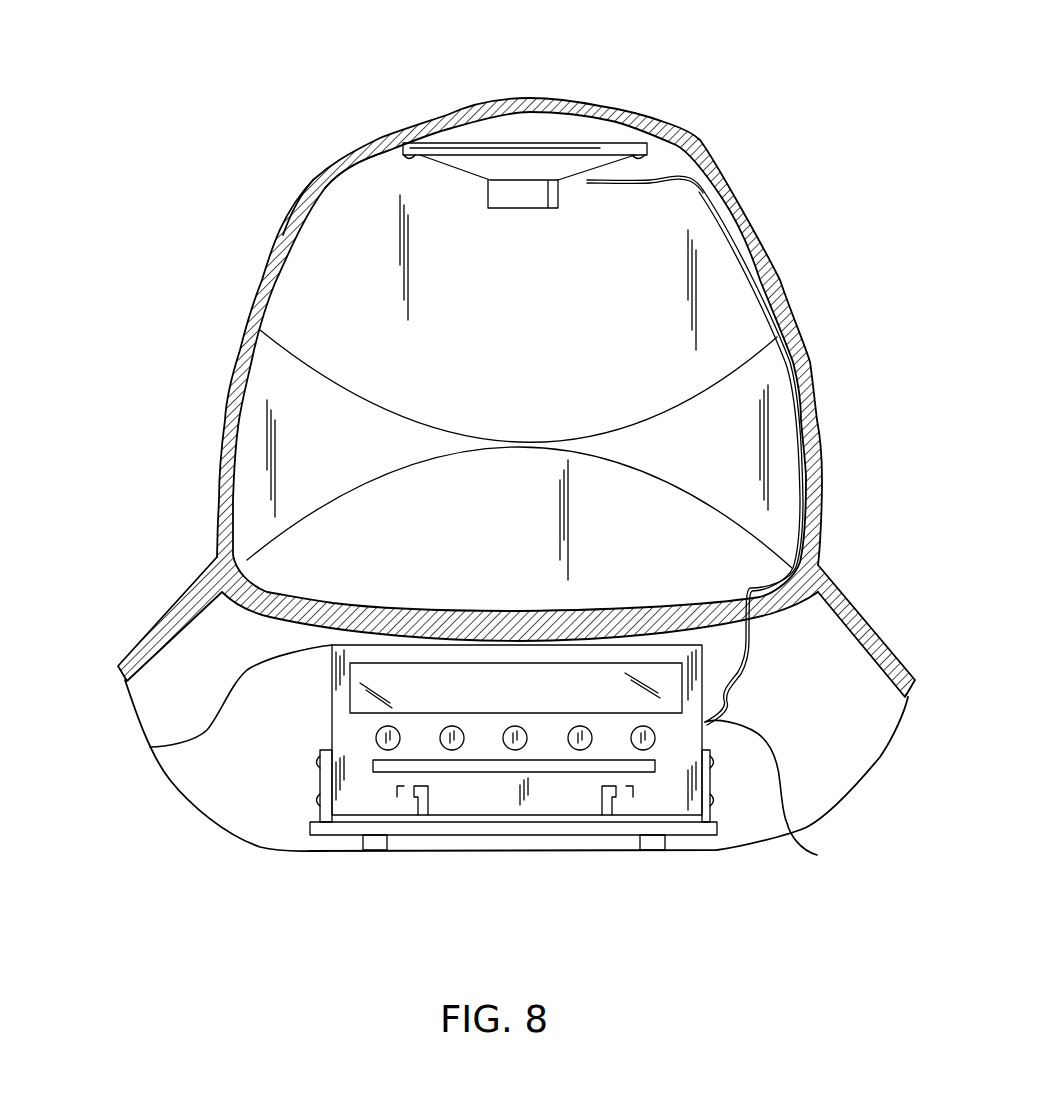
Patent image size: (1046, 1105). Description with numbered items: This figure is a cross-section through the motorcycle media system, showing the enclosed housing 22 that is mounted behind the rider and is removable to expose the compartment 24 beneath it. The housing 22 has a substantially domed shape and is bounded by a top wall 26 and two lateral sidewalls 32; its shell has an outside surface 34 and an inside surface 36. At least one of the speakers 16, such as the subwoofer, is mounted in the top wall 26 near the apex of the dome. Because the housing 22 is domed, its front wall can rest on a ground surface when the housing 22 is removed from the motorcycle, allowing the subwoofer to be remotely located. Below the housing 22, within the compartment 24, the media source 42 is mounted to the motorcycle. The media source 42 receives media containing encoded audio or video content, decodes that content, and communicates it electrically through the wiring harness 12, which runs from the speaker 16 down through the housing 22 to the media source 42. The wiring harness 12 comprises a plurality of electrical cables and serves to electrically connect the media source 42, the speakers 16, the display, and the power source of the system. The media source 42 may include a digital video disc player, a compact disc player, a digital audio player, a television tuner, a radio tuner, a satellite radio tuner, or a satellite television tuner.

The wiring harness 12 is at (817, 855).
The speaker 16 is at (490, 141).
The housing 22 is at (658, 141).
The compartment 24 is at (852, 647).
The top wall 26 is at (525, 97).
The lateral sidewall 32 is at (225, 418).
The outside surface 34 is at (328, 208).
The inside surface 36 is at (320, 197).
The media source 42 is at (150, 747).